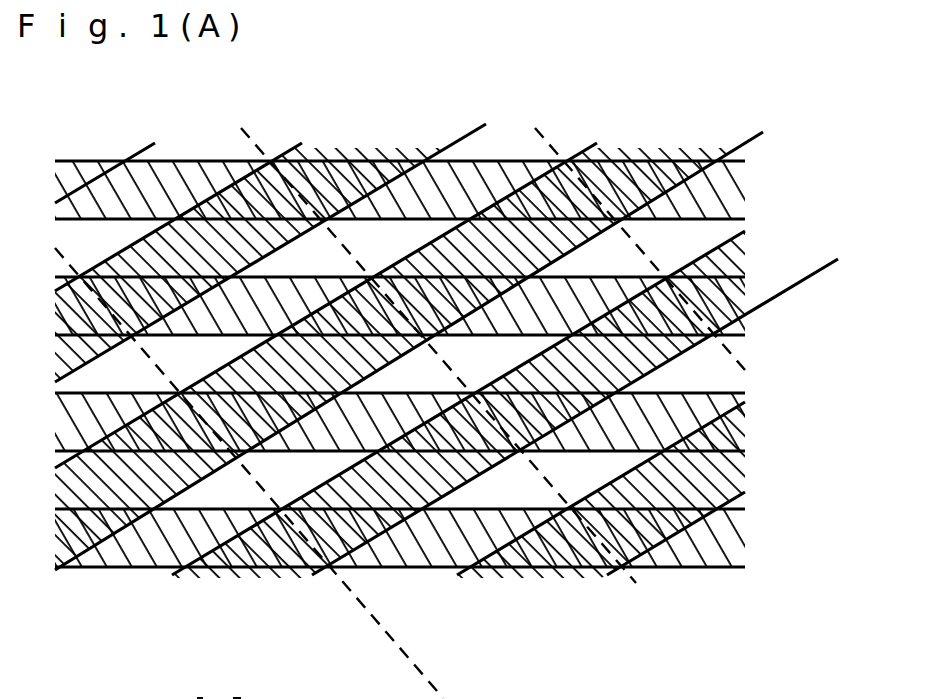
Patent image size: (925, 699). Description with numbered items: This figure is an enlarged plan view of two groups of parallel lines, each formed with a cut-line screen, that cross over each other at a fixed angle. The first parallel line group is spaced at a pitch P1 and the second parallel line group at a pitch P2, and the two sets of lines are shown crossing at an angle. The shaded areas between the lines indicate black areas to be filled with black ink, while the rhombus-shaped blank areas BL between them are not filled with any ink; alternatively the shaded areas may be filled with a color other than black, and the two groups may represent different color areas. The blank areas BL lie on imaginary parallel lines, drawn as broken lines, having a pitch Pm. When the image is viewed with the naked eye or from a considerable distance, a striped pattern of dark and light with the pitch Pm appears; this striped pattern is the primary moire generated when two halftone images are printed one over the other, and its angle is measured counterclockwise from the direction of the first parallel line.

The blank areas BL is at (393, 238).
The pitch of first parallel line group P1 is at (753, 335).
The pitch of second parallel line group P2 is at (827, 267).
The pitch of primary moire Pm is at (630, 586).